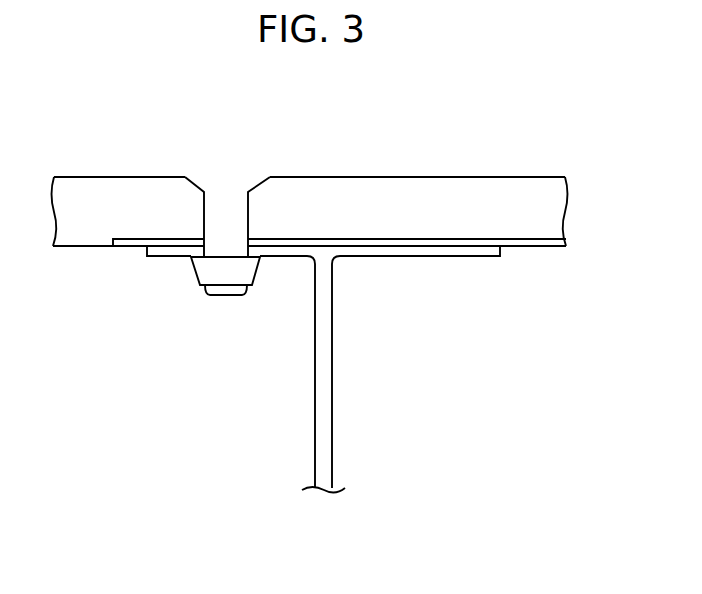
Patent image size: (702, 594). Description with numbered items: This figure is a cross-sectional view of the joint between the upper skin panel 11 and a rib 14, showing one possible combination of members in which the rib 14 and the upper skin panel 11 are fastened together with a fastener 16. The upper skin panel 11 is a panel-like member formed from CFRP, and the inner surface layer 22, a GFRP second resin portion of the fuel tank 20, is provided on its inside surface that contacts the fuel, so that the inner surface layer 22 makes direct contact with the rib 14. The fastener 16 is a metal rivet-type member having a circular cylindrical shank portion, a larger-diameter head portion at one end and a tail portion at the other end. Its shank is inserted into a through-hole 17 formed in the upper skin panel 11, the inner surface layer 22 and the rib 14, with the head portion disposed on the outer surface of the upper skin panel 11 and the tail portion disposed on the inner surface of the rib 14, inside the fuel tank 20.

The upper skin panel 11 is at (412, 185).
The through-hole 17 is at (240, 200).
The inner surface layer 22 is at (123, 244).
The rib 14 is at (325, 390).
The fastener 16 is at (232, 277).
The fuel tank 20 is at (142, 413).